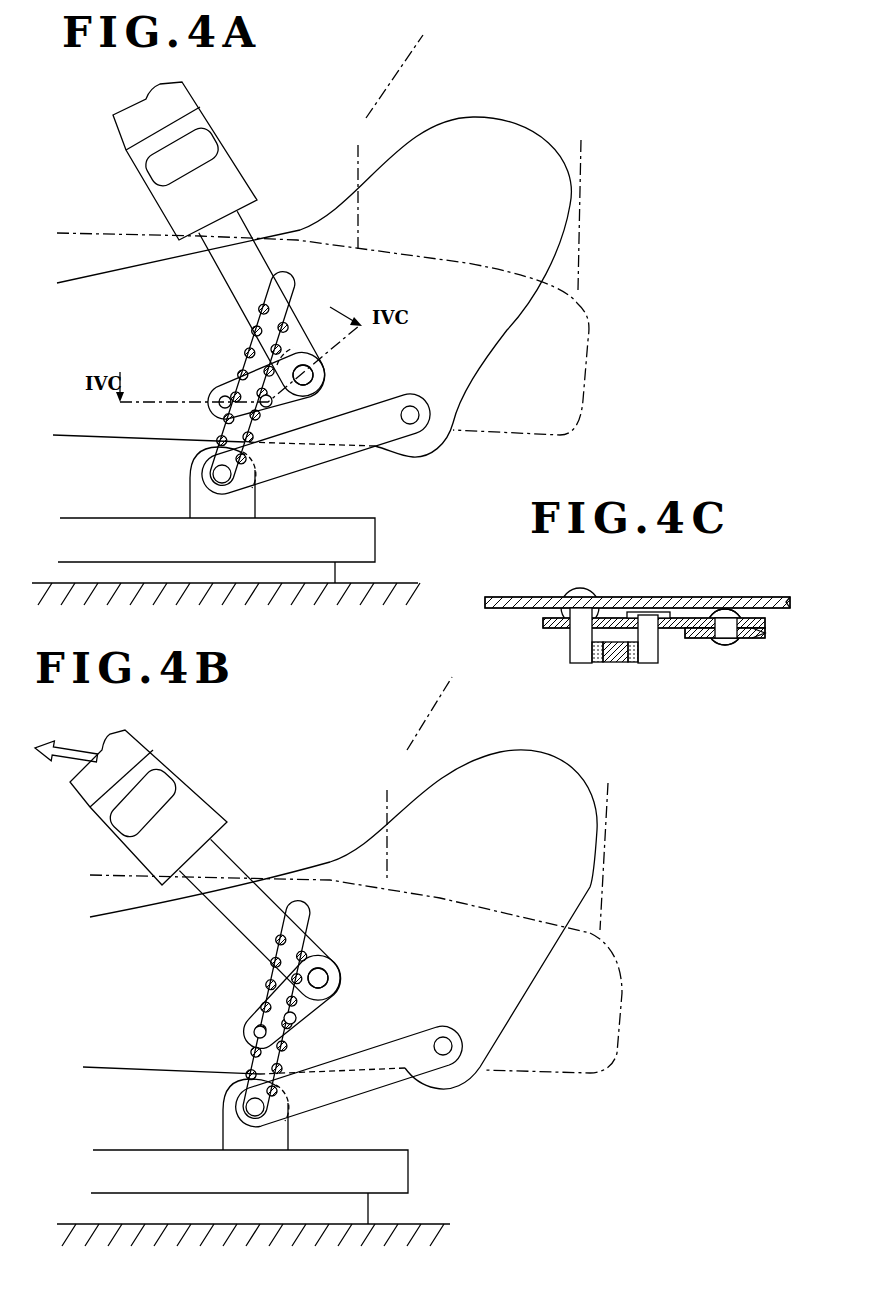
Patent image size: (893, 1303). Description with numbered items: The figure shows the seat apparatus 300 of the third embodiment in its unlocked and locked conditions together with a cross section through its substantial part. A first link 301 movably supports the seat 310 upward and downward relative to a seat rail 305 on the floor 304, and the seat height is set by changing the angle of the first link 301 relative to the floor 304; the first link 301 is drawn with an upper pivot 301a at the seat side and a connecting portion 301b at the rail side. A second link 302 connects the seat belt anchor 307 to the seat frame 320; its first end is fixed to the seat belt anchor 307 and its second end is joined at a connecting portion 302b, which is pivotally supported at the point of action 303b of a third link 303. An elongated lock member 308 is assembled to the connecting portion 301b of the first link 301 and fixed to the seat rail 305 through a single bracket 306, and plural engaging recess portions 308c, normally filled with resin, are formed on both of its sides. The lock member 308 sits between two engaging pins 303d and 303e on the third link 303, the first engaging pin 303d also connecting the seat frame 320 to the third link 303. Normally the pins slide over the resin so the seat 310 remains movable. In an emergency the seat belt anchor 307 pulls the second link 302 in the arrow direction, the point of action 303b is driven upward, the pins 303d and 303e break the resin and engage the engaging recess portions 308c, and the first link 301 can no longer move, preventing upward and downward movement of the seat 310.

In FIG. 4A, the seat apparatus 300 is at (388, 282).
In FIG. 4B, the seat apparatus 300 is at (416, 907).
In FIG. 4A, the first link 301 is at (322, 460).
In FIG. 4B, the first link 301 is at (353, 1090).
In FIG. 4A, the link pivot (seat side) 301a is at (420, 415).
In FIG. 4B, the link pivot (seat side) 301a is at (455, 1046).
In FIG. 4A, the connecting portion 301b is at (215, 476).
In FIG. 4B, the connecting portion 301b is at (248, 1109).
In FIG. 4A, the second link 302 is at (240, 230).
In FIG. 4C, the second link 302 is at (758, 643).
In FIG. 4B, the second link 302 is at (230, 860).
In FIG. 4A, the connecting portion 302b is at (305, 374).
In FIG. 4C, the connecting portion 302b is at (725, 633).
In FIG. 4B, the connecting portion 302b is at (320, 980).
In FIG. 4A, the third link 303 is at (212, 407).
In FIG. 4C, the third link 303 is at (543, 627).
In FIG. 4B, the third link 303 is at (250, 1040).
In FIG. 4A, the point of action 303b is at (305, 374).
In FIG. 4C, the point of action 303b is at (725, 633).
In FIG. 4B, the point of action 303b is at (320, 980).
In FIG. 4A, the first engaging pin 303d is at (222, 398).
In FIG. 4B, the first engaging pin 303d is at (258, 1030).
In FIG. 4A, the second engaging pin 303e is at (273, 403).
In FIG. 4C, the second engaging pin 303e is at (650, 637).
In FIG. 4B, the second engaging pin 303e is at (293, 1023).
In FIG. 4A, the floor 304 is at (257, 570).
In FIG. 4B, the floor 304 is at (282, 1215).
In FIG. 4A, the seat rail 305 is at (100, 527).
In FIG. 4B, the seat rail 305 is at (133, 1158).
In FIG. 4A, the bracket 306 is at (227, 508).
In FIG. 4B, the bracket 306 is at (258, 1140).
In FIG. 4A, the seat belt anchor 307 is at (230, 170).
In FIG. 4B, the seat belt anchor 307 is at (190, 797).
In FIG. 4A, the lock member 308 is at (297, 283).
In FIG. 4C, the lock member 308 is at (617, 660).
In FIG. 4B, the lock member 308 is at (305, 913).
In FIG. 4A, the engaging recess portions 308c is at (250, 348).
In FIG. 4C, the engaging recess portions 308c is at (637, 653).
In FIG. 4B, the engaging recess portions 308c is at (263, 1012).
In FIG. 4A, the seat 310 is at (58, 233).
In FIG. 4B, the seat 310 is at (95, 875).
In FIG. 4A, the seat frame 320 is at (382, 190).
In FIG. 4C, the seat frame 320 is at (528, 599).
In FIG. 4B, the seat frame 320 is at (412, 817).